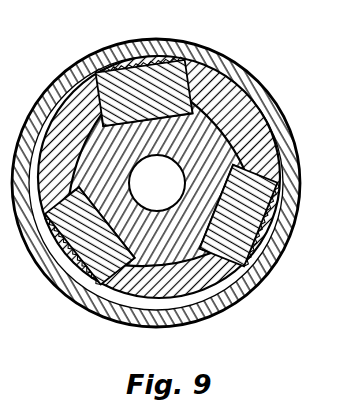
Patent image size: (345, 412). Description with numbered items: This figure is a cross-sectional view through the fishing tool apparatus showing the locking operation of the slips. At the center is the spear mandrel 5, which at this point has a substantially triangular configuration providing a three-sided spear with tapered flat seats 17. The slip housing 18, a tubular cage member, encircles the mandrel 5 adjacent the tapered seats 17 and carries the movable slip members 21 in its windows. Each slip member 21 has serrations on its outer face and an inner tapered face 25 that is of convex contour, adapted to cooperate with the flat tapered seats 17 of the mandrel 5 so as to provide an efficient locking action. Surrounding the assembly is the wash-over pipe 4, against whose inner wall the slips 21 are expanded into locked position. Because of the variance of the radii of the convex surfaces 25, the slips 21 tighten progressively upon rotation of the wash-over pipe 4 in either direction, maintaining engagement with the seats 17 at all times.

The wash-over pipe 4 is at (296, 178).
The spear mandrel 5 is at (88, 150).
The tapered flat side portions 17 is at (201, 96).
The slip housing 18 is at (255, 137).
The slip member 21 is at (177, 72).
The inner tapered face 25 is at (292, 222).